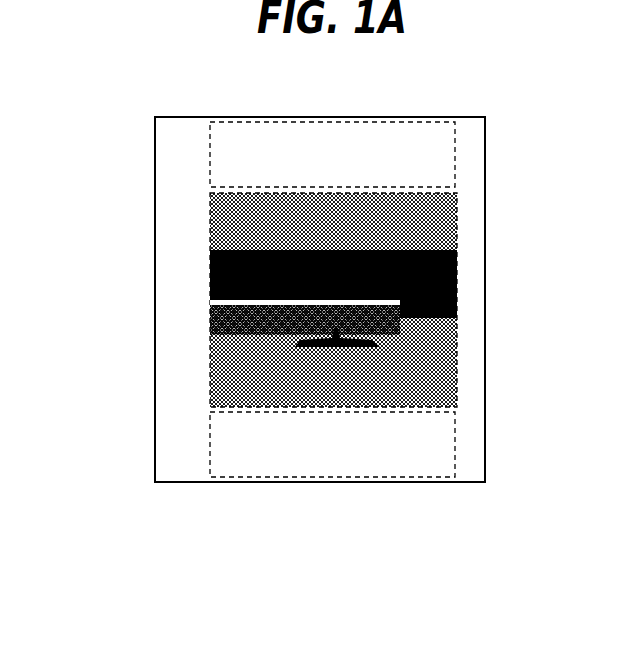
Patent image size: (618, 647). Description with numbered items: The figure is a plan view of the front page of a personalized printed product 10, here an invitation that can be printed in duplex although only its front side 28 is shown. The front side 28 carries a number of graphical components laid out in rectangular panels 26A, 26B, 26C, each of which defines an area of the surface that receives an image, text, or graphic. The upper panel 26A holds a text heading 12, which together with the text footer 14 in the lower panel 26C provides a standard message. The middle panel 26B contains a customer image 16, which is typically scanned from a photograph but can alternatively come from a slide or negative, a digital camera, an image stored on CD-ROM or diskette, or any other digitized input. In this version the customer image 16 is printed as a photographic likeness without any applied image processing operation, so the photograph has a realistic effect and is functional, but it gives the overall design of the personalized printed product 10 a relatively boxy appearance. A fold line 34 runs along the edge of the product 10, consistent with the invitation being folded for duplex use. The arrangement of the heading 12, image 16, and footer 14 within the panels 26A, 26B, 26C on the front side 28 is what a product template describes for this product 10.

The personalized printed product 10 is at (95, 272).
The text heading 12 is at (216, 152).
The text footer 14 is at (258, 458).
The customer image 16 is at (452, 318).
The panel 26A is at (455, 145).
The panel 26B is at (457, 270).
The panel 26C is at (455, 427).
The front side 28 is at (184, 416).
The fold line 34 is at (156, 370).